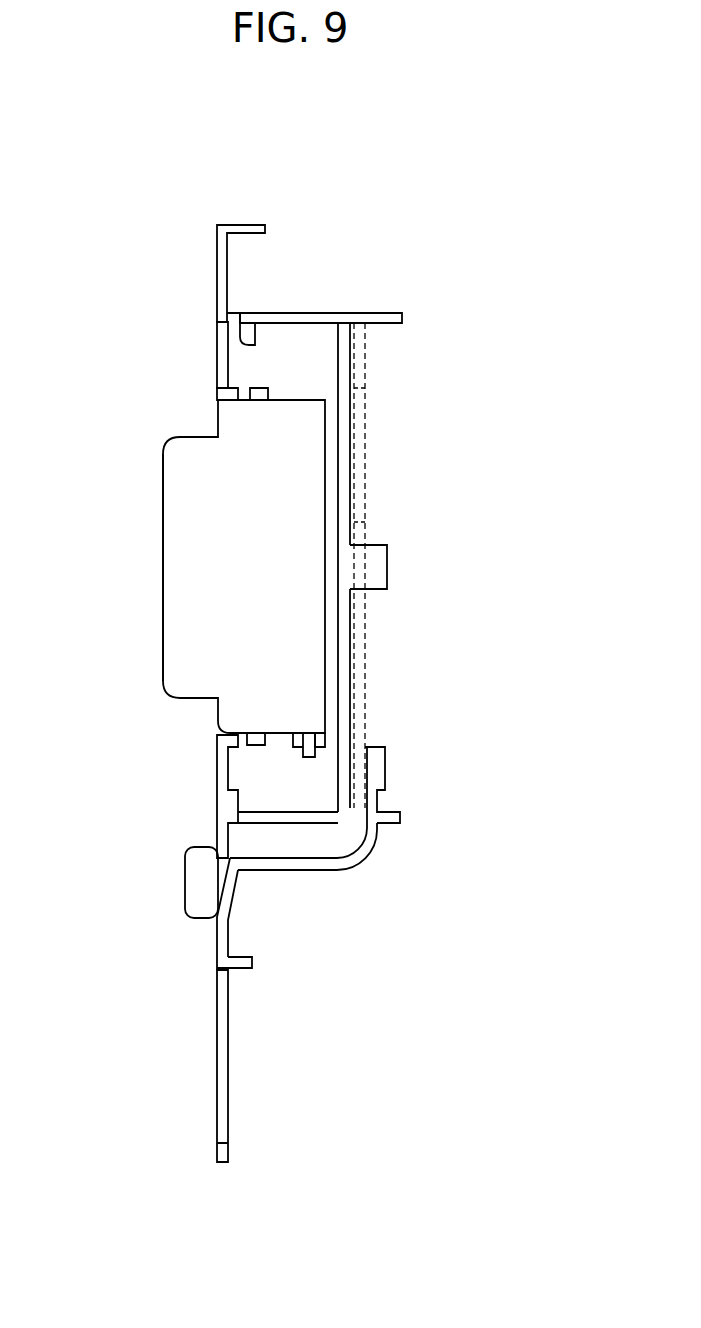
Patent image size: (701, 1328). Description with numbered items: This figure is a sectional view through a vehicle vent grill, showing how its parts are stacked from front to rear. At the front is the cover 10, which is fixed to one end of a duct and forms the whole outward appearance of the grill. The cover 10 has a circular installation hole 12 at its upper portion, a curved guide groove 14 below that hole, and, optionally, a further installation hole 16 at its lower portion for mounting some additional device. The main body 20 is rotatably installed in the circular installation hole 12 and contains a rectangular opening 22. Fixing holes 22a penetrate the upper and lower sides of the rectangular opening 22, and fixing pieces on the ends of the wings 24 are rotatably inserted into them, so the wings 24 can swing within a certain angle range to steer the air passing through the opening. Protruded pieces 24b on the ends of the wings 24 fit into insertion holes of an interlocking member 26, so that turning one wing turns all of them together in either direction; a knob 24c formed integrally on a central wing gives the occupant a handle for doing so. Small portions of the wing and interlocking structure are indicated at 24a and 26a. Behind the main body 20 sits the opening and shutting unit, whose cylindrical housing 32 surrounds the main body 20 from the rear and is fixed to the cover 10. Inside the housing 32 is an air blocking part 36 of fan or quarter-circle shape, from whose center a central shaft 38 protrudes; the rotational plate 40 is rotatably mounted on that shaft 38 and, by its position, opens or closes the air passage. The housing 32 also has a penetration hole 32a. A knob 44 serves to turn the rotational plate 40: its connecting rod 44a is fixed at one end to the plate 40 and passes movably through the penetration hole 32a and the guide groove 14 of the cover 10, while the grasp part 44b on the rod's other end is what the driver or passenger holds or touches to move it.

The cover 10 is at (218, 250).
The circular installation hole 12 is at (247, 343).
The guide groove 14 is at (240, 856).
The installation hole 16 is at (222, 1065).
The main body 20 is at (217, 345).
The rectangular opening 22 is at (266, 390).
The fixing holes 22a is at (250, 745).
The wings 24 is at (320, 434).
The upper panel edge 24a is at (234, 388).
The protruded pieces 24b is at (320, 749).
The knob 24c is at (168, 566).
The interlocking member 26 is at (300, 748).
The lower fixing tab 26a is at (310, 725).
The cylindrical housing 32 is at (330, 320).
The penetration hole 32a is at (376, 826).
The air blocking part 36 is at (345, 337).
The central shaft 38 is at (388, 553).
The rotational plate 40 is at (368, 388).
The knob 44 is at (310, 886).
The connecting rod 44a is at (343, 869).
The grasp part 44b is at (280, 914).